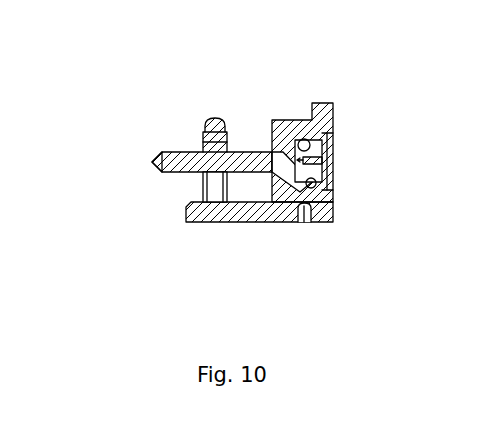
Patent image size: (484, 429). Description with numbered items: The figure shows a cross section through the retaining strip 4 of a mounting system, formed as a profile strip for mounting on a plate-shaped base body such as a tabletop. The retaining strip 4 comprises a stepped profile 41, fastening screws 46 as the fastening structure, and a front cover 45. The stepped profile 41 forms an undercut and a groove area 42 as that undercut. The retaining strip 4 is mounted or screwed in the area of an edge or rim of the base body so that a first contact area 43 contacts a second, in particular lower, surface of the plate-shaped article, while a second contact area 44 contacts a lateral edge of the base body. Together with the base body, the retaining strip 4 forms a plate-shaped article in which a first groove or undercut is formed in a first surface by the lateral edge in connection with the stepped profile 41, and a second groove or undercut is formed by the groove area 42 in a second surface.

The retaining strip 4 is at (163, 135).
The stepped profile 41 is at (285, 120).
The groove area 42 is at (307, 213).
The first contact area 43 is at (241, 211).
The second contact area 44 is at (264, 131).
The front cover 45 is at (333, 146).
The fastening screws 46 is at (152, 163).